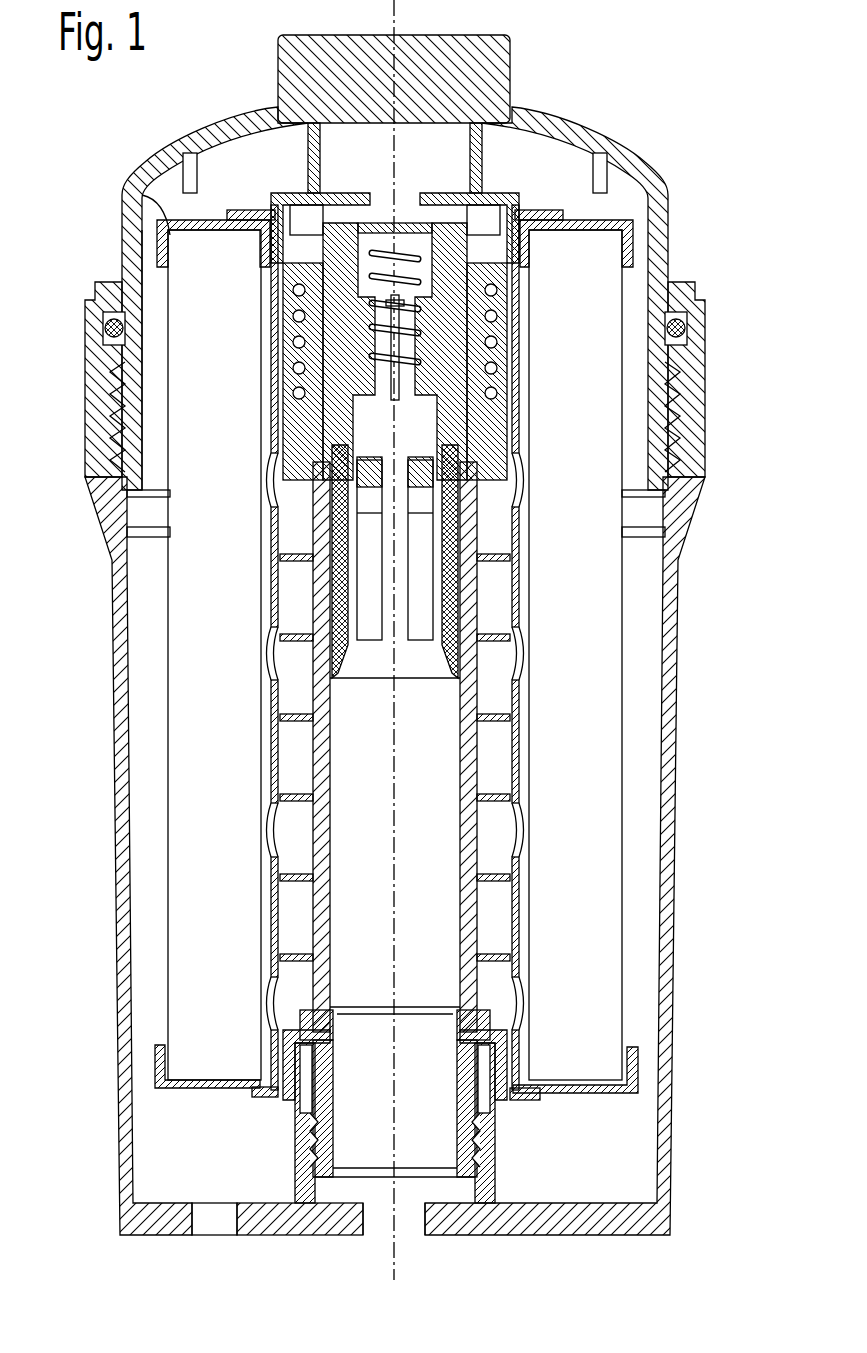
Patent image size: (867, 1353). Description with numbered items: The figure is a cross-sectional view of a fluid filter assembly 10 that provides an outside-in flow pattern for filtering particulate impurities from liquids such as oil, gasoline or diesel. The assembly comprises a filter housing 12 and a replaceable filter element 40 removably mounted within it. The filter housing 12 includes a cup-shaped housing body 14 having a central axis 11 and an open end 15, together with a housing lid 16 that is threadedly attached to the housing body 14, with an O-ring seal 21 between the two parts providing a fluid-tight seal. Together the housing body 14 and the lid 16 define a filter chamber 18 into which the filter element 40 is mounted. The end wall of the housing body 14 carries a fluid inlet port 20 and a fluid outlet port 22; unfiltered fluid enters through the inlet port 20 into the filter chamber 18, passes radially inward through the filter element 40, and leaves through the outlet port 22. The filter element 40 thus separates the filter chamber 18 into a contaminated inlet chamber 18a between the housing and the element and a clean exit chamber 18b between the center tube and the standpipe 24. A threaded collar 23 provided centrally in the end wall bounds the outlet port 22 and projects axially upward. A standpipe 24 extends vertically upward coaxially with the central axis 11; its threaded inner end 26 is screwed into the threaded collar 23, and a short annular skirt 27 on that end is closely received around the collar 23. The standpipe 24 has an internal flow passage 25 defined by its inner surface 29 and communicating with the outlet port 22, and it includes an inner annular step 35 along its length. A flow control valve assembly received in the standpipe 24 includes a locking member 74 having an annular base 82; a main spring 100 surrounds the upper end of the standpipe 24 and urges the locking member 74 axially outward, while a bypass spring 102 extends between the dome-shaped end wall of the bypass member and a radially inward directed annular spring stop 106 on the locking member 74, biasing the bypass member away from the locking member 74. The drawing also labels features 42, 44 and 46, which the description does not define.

The fluid filter assembly 10 is at (726, 184).
The central axis 11 is at (396, 820).
The filter housing 12 is at (110, 612).
The housing body 14 is at (122, 1010).
The open end 15 is at (700, 333).
The housing lid 16 is at (190, 135).
The filter chamber 18 is at (597, 1170).
The inlet chamber 18a is at (133, 677).
The exit chamber 18b is at (500, 588).
The fluid inlet port 20 is at (194, 1217).
The O-ring seal 21 is at (103, 325).
The fluid outlet port 22 is at (365, 1217).
The threaded collar 23 is at (293, 1170).
The standpipe 24 is at (482, 759).
The internal flow passage 25 is at (433, 915).
The threaded inner end 26 is at (458, 1157).
The annular skirt 27 is at (502, 1100).
The inner surface 29 is at (330, 880).
The inner annular step 35 is at (480, 480).
The filter element 40 is at (166, 718).
The second filter element 42 is at (608, 862).
The cap rib 44 is at (142, 189).
The filter end cap 46 is at (177, 1090).
The locking member 74 is at (283, 222).
The annular base 82 is at (458, 667).
The main spring 100 is at (497, 318).
The bypass spring 102 is at (410, 352).
The annular spring stop 106 is at (296, 388).